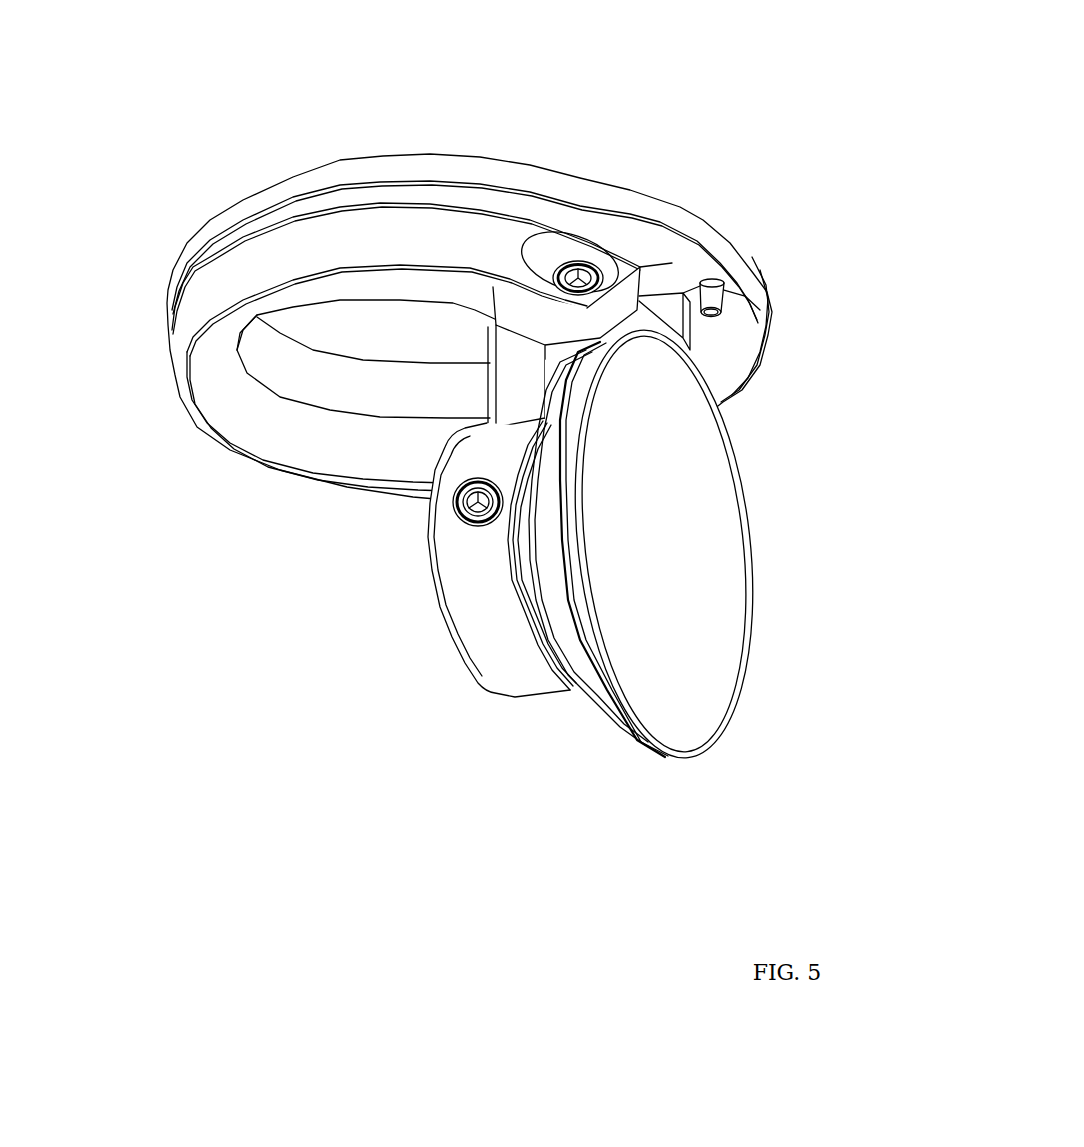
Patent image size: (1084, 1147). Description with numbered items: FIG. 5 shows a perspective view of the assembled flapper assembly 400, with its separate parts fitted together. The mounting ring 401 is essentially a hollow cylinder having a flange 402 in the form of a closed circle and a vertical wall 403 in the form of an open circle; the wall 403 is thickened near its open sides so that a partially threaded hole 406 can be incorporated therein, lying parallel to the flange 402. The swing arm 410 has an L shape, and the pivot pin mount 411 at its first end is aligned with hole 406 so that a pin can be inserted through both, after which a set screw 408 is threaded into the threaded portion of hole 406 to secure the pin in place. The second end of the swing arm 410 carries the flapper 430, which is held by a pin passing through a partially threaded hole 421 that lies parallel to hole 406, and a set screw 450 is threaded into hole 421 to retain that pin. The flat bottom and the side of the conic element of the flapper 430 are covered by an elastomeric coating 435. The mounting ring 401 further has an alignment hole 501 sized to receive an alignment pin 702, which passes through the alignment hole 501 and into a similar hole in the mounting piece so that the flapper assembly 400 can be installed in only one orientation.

The flapper assembly 400 is at (499, 436).
The mounting ring 401 is at (497, 150).
The flange 402 is at (704, 222).
The vertical wall 403 is at (200, 270).
The partially threaded hole 406 is at (551, 250).
The set screw 408 is at (589, 262).
The swing arm 410 is at (504, 383).
The pivot pin mount 411 is at (643, 317).
The partially threaded hole 421 is at (509, 586).
The flapper 430 is at (700, 490).
The elastomeric coating 435 is at (633, 757).
The set screw 450 is at (482, 515).
The alignment hole 501 is at (819, 305).
The alignment pin 702 is at (717, 300).